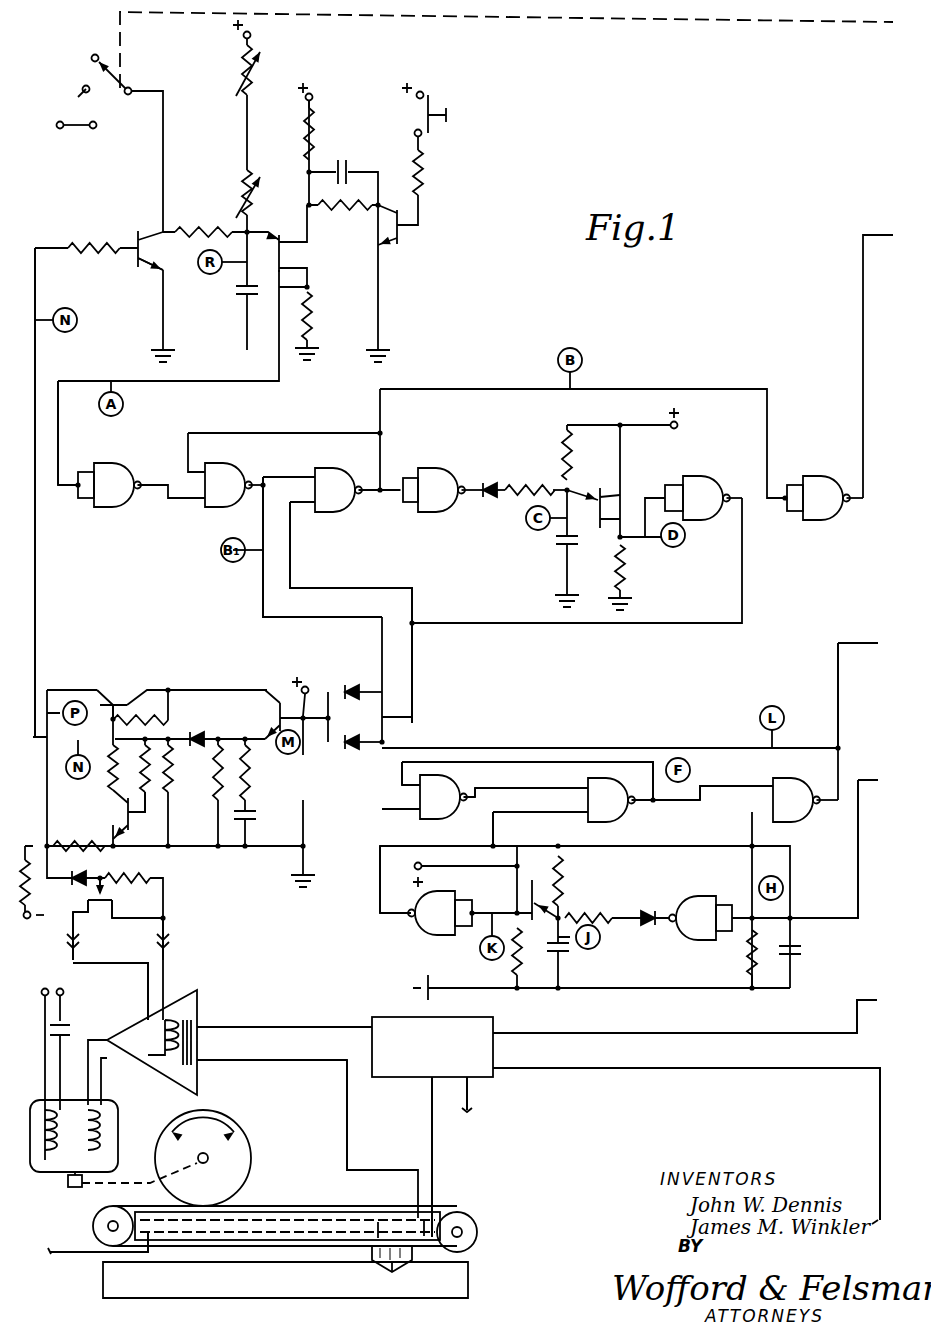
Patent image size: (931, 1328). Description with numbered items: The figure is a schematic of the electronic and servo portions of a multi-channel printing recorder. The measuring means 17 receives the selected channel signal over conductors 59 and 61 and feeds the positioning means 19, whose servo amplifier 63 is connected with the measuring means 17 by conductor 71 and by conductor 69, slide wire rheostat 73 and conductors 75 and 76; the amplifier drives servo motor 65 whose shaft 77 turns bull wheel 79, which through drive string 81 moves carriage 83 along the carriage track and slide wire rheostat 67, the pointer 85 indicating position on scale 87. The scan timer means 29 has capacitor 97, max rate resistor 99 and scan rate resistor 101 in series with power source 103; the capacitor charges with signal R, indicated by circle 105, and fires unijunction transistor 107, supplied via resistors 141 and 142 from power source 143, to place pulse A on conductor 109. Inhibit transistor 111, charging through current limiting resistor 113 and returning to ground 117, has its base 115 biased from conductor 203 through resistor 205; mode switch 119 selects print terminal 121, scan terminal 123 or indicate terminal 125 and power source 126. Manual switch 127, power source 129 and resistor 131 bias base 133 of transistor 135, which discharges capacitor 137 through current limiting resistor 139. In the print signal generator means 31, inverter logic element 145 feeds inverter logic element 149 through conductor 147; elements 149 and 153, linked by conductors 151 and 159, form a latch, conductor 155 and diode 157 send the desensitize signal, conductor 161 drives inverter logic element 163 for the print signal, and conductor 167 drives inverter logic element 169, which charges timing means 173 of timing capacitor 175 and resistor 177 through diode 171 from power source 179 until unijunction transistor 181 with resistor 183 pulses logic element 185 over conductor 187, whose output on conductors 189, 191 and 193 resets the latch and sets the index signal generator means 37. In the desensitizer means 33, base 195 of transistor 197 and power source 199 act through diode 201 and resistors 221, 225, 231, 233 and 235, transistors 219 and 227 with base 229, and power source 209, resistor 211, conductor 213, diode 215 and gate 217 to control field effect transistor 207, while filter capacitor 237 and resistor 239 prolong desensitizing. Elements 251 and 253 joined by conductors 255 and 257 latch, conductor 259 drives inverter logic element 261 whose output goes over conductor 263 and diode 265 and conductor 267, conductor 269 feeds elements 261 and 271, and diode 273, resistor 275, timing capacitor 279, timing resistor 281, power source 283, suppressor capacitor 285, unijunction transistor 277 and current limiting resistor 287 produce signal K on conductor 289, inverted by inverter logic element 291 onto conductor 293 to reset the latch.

The measuring means 17 is at (406, 1079).
The positioning means 19 is at (278, 1102).
The scan timer means 29 is at (320, 370).
The print signal generator means 31 is at (588, 630).
The desensitizer means 33 is at (264, 881).
The index signal generator means 37 is at (668, 732).
The conductor 59 is at (682, 1072).
The conductor 61 is at (704, 1028).
The servo amplifier 63 is at (198, 1088).
The servo motor 65 is at (119, 1126).
The carriage track and slide wire rheostat 67 is at (288, 1172).
The conductor 69 is at (354, 1082).
The conductor 71 is at (284, 1026).
The slide wire rheostat 73 is at (348, 1220).
The conductor 75 is at (435, 1144).
The conductor 76 is at (472, 1102).
The shaft 77 is at (70, 1191).
The bull wheel 79 is at (250, 1138).
The drive string 81 is at (272, 1208).
The carriage 83 is at (380, 1264).
The pointer 85 is at (394, 1270).
The scale 87 is at (207, 1298).
The capacitor 97 is at (236, 299).
The max rate resistor 99 is at (252, 200).
The scan rate resistor 101 is at (252, 92).
The power source 103 is at (252, 33).
The circle 105 is at (206, 273).
The unijunction transistor 107 is at (296, 254).
The conductor 109 is at (60, 440).
The inhibit transistor 111 is at (132, 266).
The current limiting resistor 113 is at (203, 228).
The base 115 is at (123, 233).
The ground 117 is at (159, 346).
The mode switch 119 is at (140, 88).
The print terminal 121 is at (101, 53).
The scan terminal 123 is at (67, 103).
The indicate terminal 125 is at (93, 130).
The power source 126 is at (57, 130).
The manual switch 127 is at (432, 138).
The power source 129 is at (416, 80).
The resistor 131 is at (422, 186).
The base 133 is at (420, 224).
The transistor 135 is at (402, 236).
The capacitor 137 is at (348, 170).
The current limiting resistor 139 is at (352, 208).
The resistor 141 is at (312, 120).
The resistor 142 is at (314, 310).
The power source 143 is at (312, 90).
The inverter logic element 145 is at (102, 512).
The conductor 147 is at (166, 506).
The inverter logic element 149 is at (216, 510).
The conductor 151 is at (282, 467).
The inverter logic element 153 is at (338, 514).
The conductor 155 is at (302, 620).
The diode 157 is at (382, 680).
The conductor 159 is at (286, 433).
The conductor 161 is at (666, 389).
The inverter logic element 163 is at (826, 520).
The conductor 167 is at (394, 480).
The inverter logic element 169 is at (444, 514).
The diode 171 is at (484, 502).
The timing means 173 is at (542, 535).
The timing capacitor 175 is at (576, 546).
The resistor 177 is at (558, 449).
The power source 179 is at (684, 422).
The unijunction transistor 181 is at (614, 493).
The resistor 183 is at (624, 564).
The logic element 185 is at (726, 517).
The conductor 187 is at (662, 482).
The conductor 189 is at (666, 626).
The conductor 191 is at (374, 588).
The conductor 193 is at (412, 698).
The base 195 is at (354, 688).
The transistor 197 is at (274, 708).
The power source 199 is at (306, 673).
The diode 201 is at (194, 742).
The conductor 203 is at (37, 606).
The resistor 205 is at (85, 242).
The field effect transistor 207 is at (90, 987).
The power source 209 is at (30, 932).
The resistor 211 is at (28, 891).
The conductor 213 is at (66, 864).
The diode 215 is at (143, 867).
The gate 217 is at (112, 902).
The transistor 219 is at (116, 702).
The resistor 221 is at (169, 722).
The resistor 225 is at (110, 785).
The transistor 227 is at (118, 818).
The base 229 is at (148, 814).
The biasing resistor 231 is at (154, 800).
The current limiting resistor 233 is at (153, 782).
The current limiting resistor 235 is at (222, 746).
The filter capacitor 237 is at (254, 822).
The resistor 239 is at (247, 788).
The inverter logic element 251 is at (428, 816).
The inverter logic element 253 is at (626, 815).
The conductor 255 is at (478, 802).
The conductor 257 is at (553, 771).
The conductor 259 is at (728, 778).
The inverter logic element 261 is at (800, 778).
The conductor 263 is at (604, 745).
The diode 265 is at (348, 750).
The conductor 267 is at (838, 679).
The conductor 269 is at (858, 864).
The inverter logic element 271 is at (686, 897).
The diode 273 is at (650, 926).
The resistor 275 is at (590, 912).
The unijunction transistor 277 is at (528, 903).
The timing capacitor 279 is at (573, 956).
The timing resistor 281 is at (561, 870).
The power source 283 is at (434, 874).
The suppressor capacitor 285 is at (802, 958).
The current limiting resistor 287 is at (516, 968).
The conductor 289 is at (475, 930).
The inverter logic element 291 is at (425, 936).
The conductor 293 is at (499, 826).